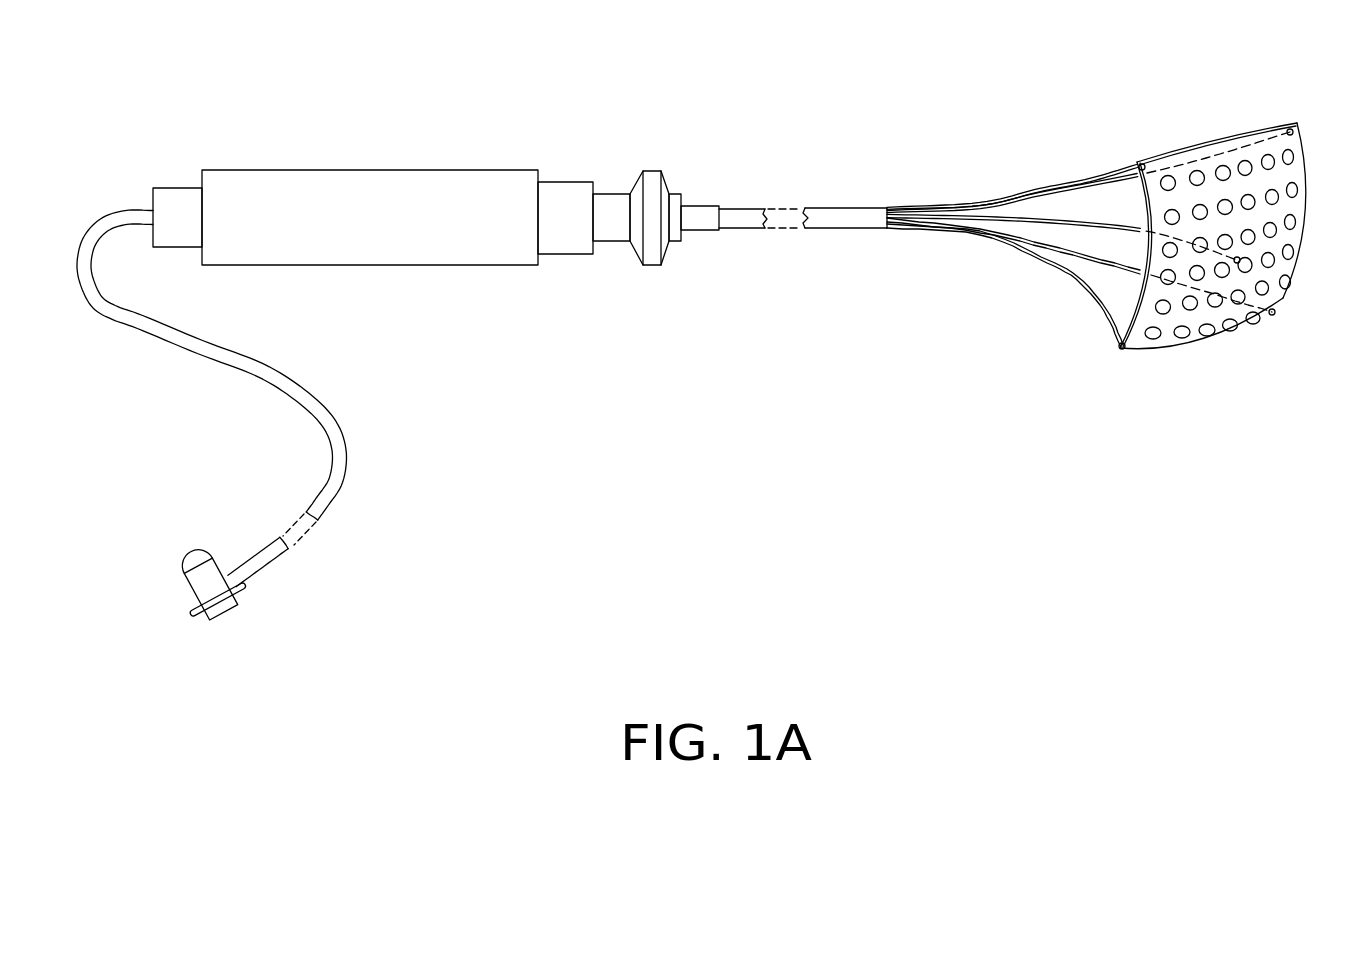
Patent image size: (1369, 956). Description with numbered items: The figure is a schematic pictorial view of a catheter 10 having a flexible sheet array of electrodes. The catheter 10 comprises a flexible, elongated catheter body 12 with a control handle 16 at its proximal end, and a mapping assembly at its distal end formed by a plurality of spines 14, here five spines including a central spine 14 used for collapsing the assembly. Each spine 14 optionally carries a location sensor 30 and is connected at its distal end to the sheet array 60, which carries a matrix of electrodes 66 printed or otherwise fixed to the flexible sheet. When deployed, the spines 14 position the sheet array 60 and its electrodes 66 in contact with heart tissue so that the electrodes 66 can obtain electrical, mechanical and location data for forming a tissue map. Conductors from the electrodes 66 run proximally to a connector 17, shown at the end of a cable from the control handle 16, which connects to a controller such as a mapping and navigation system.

The catheter 10 is at (388, 70).
The catheter body 12 is at (749, 229).
The spine 14 is at (1010, 246).
The control handle 16 is at (418, 235).
The connector 17 is at (183, 588).
The location sensor 30 is at (1136, 165).
The sheet array 60 is at (1206, 239).
The electrodes 66 is at (1168, 176).